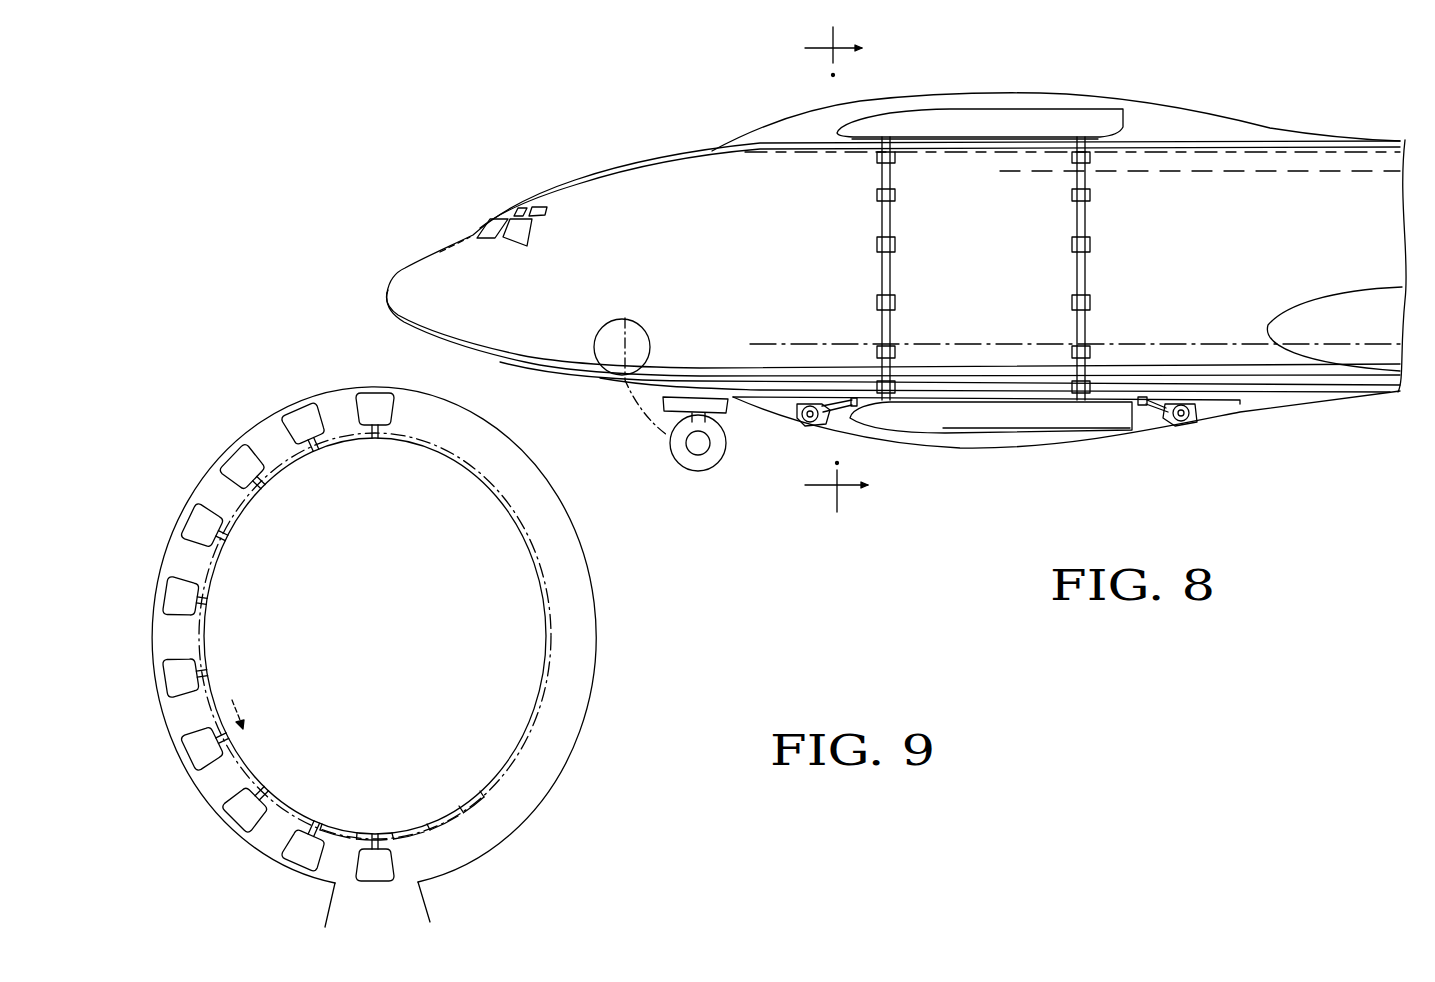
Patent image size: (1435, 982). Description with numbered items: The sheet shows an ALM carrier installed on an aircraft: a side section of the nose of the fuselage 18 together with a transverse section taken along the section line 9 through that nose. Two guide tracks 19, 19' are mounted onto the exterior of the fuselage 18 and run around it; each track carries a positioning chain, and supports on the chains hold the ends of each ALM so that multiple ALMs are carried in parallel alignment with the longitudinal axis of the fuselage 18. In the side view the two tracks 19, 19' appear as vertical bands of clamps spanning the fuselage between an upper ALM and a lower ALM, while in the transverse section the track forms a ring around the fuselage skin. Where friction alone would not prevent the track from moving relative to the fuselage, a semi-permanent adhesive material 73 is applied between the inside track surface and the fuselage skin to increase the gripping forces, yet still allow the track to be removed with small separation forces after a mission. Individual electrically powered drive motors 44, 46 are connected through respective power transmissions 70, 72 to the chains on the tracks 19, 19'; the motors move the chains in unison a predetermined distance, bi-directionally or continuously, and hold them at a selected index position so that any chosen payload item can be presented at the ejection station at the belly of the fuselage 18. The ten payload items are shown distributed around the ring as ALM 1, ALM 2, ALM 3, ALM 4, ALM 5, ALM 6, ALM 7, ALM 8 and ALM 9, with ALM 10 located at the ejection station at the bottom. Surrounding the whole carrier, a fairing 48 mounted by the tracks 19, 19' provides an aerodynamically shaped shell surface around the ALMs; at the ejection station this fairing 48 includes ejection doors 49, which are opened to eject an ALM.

In FIG. 8, the fuselage 18 is at (727, 281).
In FIG. 8, the guide track 19 is at (861, 268).
In FIG. 9, the guide track 19 is at (398, 639).
In FIG. 8, the guide track 19' is at (1108, 268).
In FIG. 8, the drive motor 44 is at (800, 427).
In FIG. 8, the drive motor 46 is at (1193, 427).
In FIG. 8, the fairing 48 is at (1214, 117).
In FIG. 9, the fairing 48 is at (598, 657).
In FIG. 9, the ejection doors 49 is at (430, 905).
In FIG. 8, the power transmission 70 is at (855, 398).
In FIG. 8, the power transmission 72 is at (1145, 398).
In FIG. 9, the semi-permanent adhesive material 73 is at (425, 437).
In FIG. 8, the section line 9— 9 is at (836, 267).
In FIG. 8, the ALM ALM 1 is at (1017, 118).
In FIG. 9, the ALM ALM 1 is at (372, 395).
In FIG. 9, the ALM ALM 2 is at (293, 412).
In FIG. 9, the ALM ALM 3 is at (233, 460).
In FIG. 9, the ALM ALM 4 is at (190, 520).
In FIG. 9, the ALM ALM 5 is at (170, 593).
In FIG. 9, the ALM ALM 6 is at (172, 677).
In FIG. 9, the ALM ALM 7 is at (195, 755).
In FIG. 9, the ALM ALM 8 is at (245, 812).
In FIG. 9, the ALM ALM 9 is at (300, 858).
In FIG. 8, the ALM ALM 10 is at (1038, 420).
In FIG. 9, the ALM ALM 10 is at (377, 873).